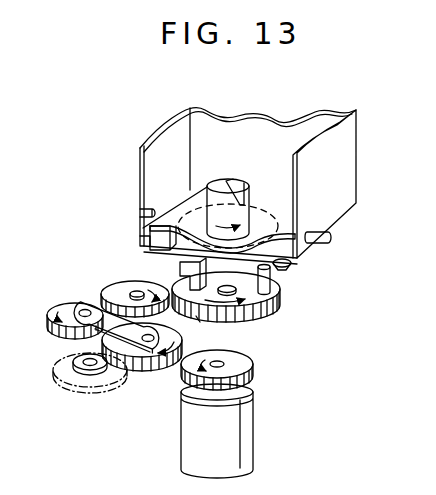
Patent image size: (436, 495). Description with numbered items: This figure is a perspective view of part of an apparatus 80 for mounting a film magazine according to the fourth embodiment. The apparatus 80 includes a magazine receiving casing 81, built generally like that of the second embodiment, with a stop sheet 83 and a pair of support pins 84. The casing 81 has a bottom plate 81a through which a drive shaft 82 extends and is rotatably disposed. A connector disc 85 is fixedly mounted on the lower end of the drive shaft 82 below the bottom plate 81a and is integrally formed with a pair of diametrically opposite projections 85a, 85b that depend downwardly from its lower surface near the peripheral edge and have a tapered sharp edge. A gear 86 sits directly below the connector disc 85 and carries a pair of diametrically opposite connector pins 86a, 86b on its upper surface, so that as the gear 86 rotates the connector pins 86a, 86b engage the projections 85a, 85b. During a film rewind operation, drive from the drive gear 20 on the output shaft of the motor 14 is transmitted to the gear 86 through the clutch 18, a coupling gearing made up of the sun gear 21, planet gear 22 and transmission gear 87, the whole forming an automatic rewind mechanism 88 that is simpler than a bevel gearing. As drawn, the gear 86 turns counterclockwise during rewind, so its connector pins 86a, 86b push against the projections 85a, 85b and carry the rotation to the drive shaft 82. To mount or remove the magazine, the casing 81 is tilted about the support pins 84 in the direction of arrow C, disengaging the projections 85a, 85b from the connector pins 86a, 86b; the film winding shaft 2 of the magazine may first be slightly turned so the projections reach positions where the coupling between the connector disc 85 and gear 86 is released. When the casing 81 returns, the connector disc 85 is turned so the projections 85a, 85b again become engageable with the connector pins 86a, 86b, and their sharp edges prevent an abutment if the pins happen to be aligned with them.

The film winding shaft 2 is at (55, 371).
The motor 14 is at (245, 421).
The clutch 18 is at (72, 348).
The drive gear 20 is at (245, 363).
The sun gear 21 is at (147, 354).
The planet gear 22 is at (60, 302).
The apparatus 80 is at (84, 240).
The magazine receiving casing 81 is at (352, 136).
The bottom plate 81a is at (140, 231).
The drive shaft 82 is at (240, 171).
The stop sheet 83 is at (156, 247).
The support pins 84 is at (140, 203).
The connector disc 85 is at (200, 216).
The projection 85a is at (180, 272).
The projection 85b is at (290, 265).
The gear 86 is at (273, 309).
The connector pin 86a is at (198, 320).
The connector pin 86b is at (272, 282).
The transmission gear 87 is at (120, 285).
The automatic rewind mechanism 88 is at (285, 347).
The arrow c C is at (303, 224).